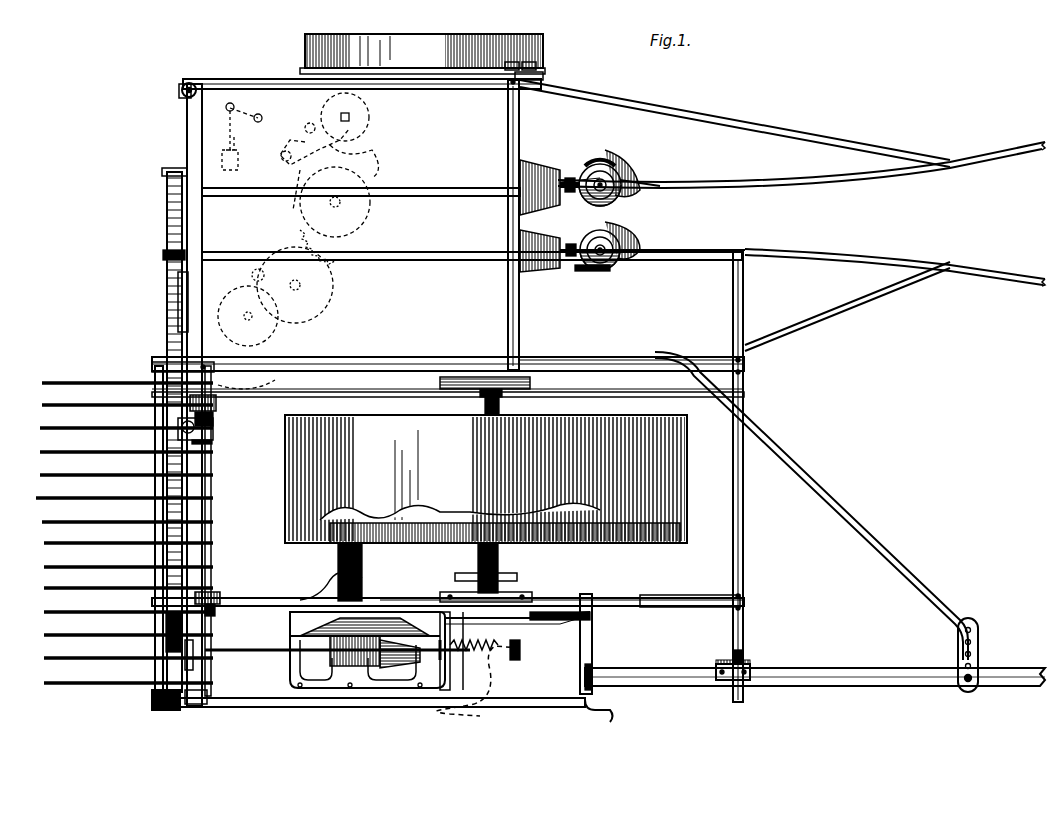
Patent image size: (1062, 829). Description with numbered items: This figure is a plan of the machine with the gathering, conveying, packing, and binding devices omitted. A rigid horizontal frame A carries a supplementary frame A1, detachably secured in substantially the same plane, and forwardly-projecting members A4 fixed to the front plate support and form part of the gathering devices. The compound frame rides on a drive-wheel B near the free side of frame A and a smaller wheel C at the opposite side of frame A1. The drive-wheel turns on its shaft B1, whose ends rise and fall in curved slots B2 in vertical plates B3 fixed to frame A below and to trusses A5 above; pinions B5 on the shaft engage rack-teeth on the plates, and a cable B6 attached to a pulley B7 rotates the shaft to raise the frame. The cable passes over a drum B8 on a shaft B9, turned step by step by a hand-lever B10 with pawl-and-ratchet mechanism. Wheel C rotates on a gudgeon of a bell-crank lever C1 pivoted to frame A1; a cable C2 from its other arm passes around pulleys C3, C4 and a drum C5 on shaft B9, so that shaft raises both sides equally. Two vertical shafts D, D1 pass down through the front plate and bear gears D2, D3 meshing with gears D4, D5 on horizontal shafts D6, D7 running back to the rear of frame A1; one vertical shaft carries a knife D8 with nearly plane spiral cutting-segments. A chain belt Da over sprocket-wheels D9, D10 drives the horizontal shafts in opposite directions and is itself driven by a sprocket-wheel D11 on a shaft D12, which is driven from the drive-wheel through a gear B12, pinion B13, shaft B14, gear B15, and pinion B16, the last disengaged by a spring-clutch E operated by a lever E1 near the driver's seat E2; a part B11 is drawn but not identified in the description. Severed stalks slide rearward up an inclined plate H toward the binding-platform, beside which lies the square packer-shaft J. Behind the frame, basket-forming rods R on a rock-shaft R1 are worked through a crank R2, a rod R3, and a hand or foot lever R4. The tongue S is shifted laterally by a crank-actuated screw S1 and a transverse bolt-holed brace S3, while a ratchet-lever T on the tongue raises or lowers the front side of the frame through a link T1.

The rigid horizontal frame A is at (461, 392).
The supplementary frame A1 is at (519, 126).
The forwardly-projecting members A4 is at (725, 160).
The trusses A5 is at (600, 352).
The drive-wheel B is at (486, 479).
The drive-wheel shaft B1 is at (470, 585).
The curved slots B2 is at (870, 535).
The vertical plates B3 is at (530, 598).
The pinions B5 is at (505, 580).
The cable B6 is at (360, 386).
The pulley B7 is at (502, 405).
The drum B8 is at (216, 403).
The shaft B9 is at (212, 468).
The hand-lever B10 is at (215, 614).
The drum standard B11 is at (372, 580).
The gear B12 is at (435, 560).
The pinion B13 is at (335, 568).
The shaft B14 is at (367, 650).
The gear B15 is at (290, 628).
The pinion B16 is at (375, 657).
The supporting-wheel C is at (424, 51).
The bell-crank lever C1 is at (540, 68).
The cable C2 is at (268, 72).
The pulley C3 is at (180, 96).
The pulley C4 is at (178, 432).
The drum C5 is at (213, 420).
The vertical shaft D is at (600, 272).
The vertical shaft D1 is at (625, 168).
The gear D2 is at (630, 262).
The gear D3 is at (605, 165).
The gear D4 is at (572, 275).
The gear D5 is at (585, 162).
The horizontal shaft D6 is at (332, 308).
The horizontal shaft D7 is at (368, 215).
The knife D8 is at (630, 205).
The sprocket-wheel D9 is at (164, 256).
The chain belt Da is at (168, 292).
The sprocket-wheel D10 is at (165, 184).
The sprocket-wheel D11 is at (166, 664).
The shaft D12 is at (215, 660).
The spring-clutch E is at (362, 651).
The lever E1 is at (545, 628).
The seat E2 is at (485, 712).
The inclined plate H is at (286, 153).
The packer-shaft J is at (352, 115).
The basket-forming rods R is at (45, 500).
The rock-shaft R1 is at (155, 553).
The crank R2 is at (168, 712).
The rod R3 is at (258, 708).
The lever R4 is at (580, 718).
The tongue S is at (862, 668).
The crank-actuated screw S1 is at (610, 645).
The brace S3 is at (978, 655).
The ratchet-lever T is at (715, 660).
The link T1 is at (748, 660).